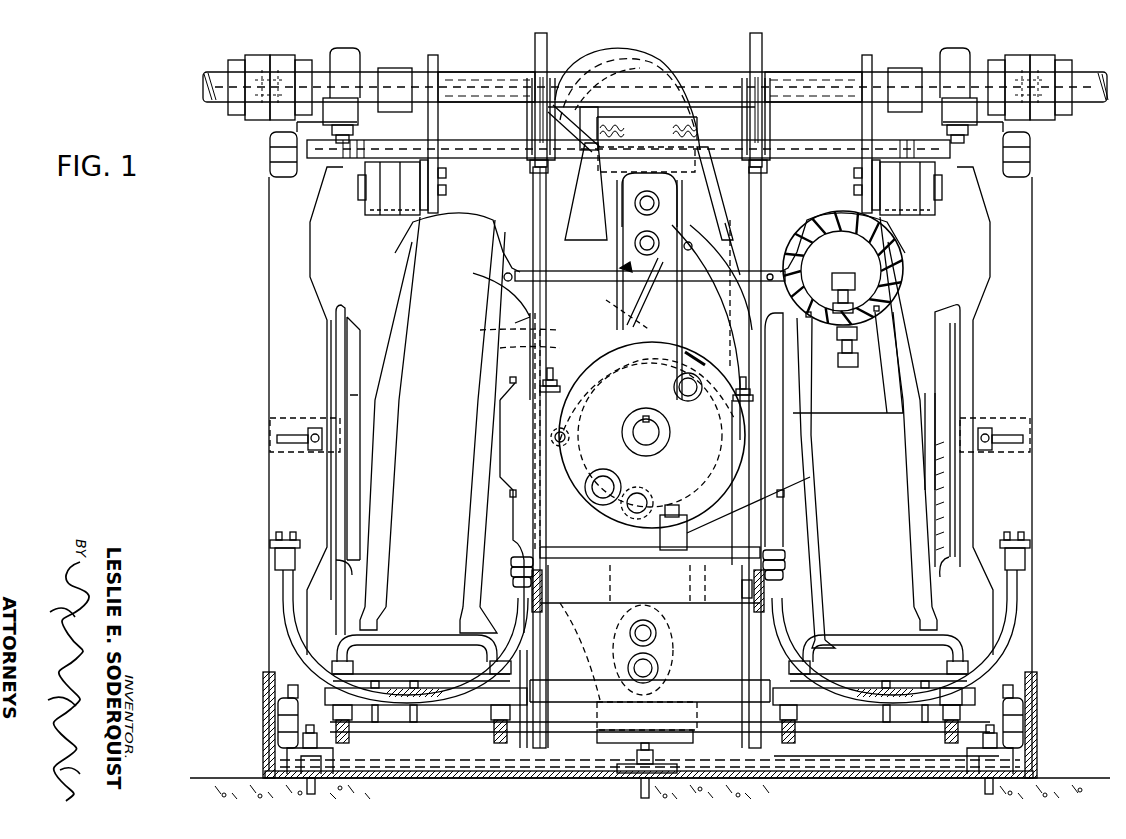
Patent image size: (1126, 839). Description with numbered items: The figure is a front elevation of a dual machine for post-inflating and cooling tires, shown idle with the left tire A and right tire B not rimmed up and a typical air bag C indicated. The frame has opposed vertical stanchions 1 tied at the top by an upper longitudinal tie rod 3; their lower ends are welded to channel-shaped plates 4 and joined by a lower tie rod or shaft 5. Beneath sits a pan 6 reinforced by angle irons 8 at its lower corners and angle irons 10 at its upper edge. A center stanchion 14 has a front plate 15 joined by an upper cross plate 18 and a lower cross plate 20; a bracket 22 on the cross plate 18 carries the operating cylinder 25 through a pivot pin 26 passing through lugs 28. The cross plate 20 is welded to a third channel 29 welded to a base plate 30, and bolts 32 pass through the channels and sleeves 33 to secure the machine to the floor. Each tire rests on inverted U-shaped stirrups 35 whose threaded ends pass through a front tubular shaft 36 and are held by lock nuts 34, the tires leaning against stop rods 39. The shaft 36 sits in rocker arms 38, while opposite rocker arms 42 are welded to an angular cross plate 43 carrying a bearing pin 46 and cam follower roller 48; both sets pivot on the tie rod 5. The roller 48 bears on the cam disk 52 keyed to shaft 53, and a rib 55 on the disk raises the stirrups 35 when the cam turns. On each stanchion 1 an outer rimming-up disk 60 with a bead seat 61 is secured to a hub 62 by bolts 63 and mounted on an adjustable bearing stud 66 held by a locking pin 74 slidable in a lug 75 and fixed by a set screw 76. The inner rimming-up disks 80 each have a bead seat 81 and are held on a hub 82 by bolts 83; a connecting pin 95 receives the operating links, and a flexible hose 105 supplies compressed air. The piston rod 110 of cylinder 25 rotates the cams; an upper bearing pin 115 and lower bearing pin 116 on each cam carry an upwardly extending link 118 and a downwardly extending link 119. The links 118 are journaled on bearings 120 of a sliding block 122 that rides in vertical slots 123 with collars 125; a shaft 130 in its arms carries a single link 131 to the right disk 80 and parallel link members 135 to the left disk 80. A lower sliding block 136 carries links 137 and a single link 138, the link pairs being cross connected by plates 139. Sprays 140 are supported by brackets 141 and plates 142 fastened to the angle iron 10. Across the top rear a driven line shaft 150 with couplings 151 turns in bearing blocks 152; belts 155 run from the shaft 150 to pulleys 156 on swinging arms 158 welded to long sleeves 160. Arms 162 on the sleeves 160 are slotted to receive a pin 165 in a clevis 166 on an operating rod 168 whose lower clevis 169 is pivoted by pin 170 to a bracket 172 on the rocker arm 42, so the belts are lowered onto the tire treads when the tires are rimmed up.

The vertical stanchion 1 is at (268, 306).
The upper longitudinal tie rod 3 is at (818, 160).
The channel-shaped plate 4 is at (332, 750).
The lower longitudinal tie rod or shaft 5 is at (855, 722).
The pan 6 is at (1037, 713).
The angle iron 8 is at (1030, 764).
The angle iron 10 is at (1034, 688).
The center stanchion 14 is at (724, 206).
The front plate 15 is at (572, 198).
The cross plate 18 is at (656, 136).
The cross plate 20 is at (690, 742).
The bracket 22 is at (643, 72).
The operating cylinder 25 is at (545, 207).
The pivot pin 26 is at (582, 62).
The lug 28 is at (590, 82).
The third channel 29 is at (597, 772).
The base plate 30 is at (600, 779).
The bolt 32 is at (300, 790).
The sleeve 33 is at (345, 764).
The lock nut 34 is at (958, 704).
The inverted U-shaped rod or stirrup 35 is at (397, 642).
The front tubular shaft 36 is at (790, 720).
The rocker arm 38 is at (605, 636).
The stop rod 39 is at (516, 270).
The rocker arm 42 is at (540, 640).
The angular cross plate 43 is at (703, 640).
The bearing pin 46 is at (790, 478).
The cam follower or roller 48 is at (700, 520).
The cam disk 52 is at (552, 403).
The shaft 53 is at (652, 448).
The cam surface rib 55 is at (760, 410).
The outer rimming-up closure or disk 60 is at (335, 368).
The bead seat 61 is at (340, 566).
The hub 62 is at (345, 406).
The bolt 63 is at (362, 350).
The bearing stud 66 is at (292, 462).
The locking pin 74 is at (290, 440).
The lug 75 is at (318, 452).
The set screw 76 is at (310, 438).
The inner rimming-up closure or disk 80 is at (520, 525).
The bead seat 81 is at (515, 308).
The hub 82 is at (495, 433).
The bolt 83 is at (510, 379).
The connecting pin 95 is at (560, 450).
The flexible hose 105 is at (545, 372).
The piston rod 110 is at (510, 344).
The upper bearing pin 115 is at (682, 378).
The lower bearing pin 116 is at (578, 576).
The upwardly extending link 118 is at (736, 234).
The downwardly extending link 119 is at (578, 660).
The bearing 120 is at (640, 197).
The sliding block 122 is at (620, 266).
The vertical slot 123 is at (672, 281).
The collar 125 is at (616, 224).
The shaft 130 is at (667, 240).
The single link 131 is at (634, 299).
The parallel link member 135 is at (500, 348).
The sliding block 136 is at (540, 735).
The link 137 is at (705, 603).
The single link 138 is at (577, 590).
The plate 139 is at (758, 484).
The spray 140 is at (1010, 613).
The bracket 141 is at (266, 546).
The plate 142 is at (407, 673).
The shaft 150 is at (705, 72).
The coupling 151 is at (283, 58).
The bearing block 152 is at (348, 60).
The belt 155 is at (398, 68).
The pulley 156 is at (368, 210).
The swinging arm 158 is at (440, 125).
The long sleeve 160 is at (480, 62).
The arm 162 is at (548, 46).
The pin 165 is at (741, 70).
The clevis 166 is at (766, 174).
The operating rod 168 is at (690, 246).
The clevis 169 is at (790, 576).
The pin 170 is at (773, 590).
The bracket 172 is at (512, 590).
The tire A is at (412, 246).
The tire B is at (896, 258).
The air bag C is at (882, 282).